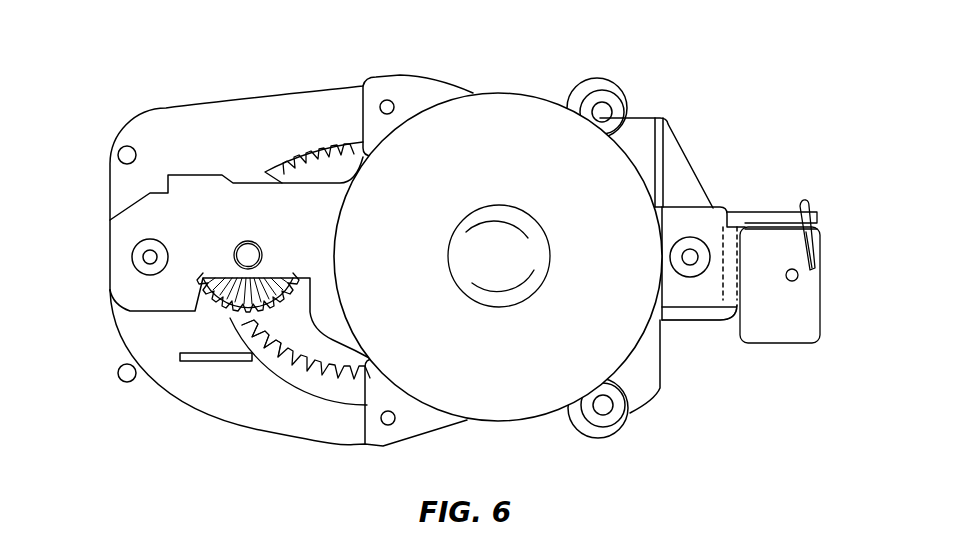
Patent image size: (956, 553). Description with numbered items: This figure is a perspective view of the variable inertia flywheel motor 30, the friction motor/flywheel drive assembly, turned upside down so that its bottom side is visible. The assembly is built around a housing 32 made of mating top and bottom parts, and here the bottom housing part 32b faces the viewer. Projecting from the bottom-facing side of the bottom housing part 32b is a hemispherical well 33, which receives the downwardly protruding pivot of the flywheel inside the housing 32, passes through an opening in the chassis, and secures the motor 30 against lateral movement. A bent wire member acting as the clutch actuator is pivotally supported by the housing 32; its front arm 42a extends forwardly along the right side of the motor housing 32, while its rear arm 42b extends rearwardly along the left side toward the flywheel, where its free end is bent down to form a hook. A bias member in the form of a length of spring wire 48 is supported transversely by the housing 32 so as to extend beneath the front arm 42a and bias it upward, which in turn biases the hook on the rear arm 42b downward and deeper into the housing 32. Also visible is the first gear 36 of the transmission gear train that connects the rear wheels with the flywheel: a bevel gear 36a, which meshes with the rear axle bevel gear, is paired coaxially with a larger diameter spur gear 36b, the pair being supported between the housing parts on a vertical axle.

The variable inertia flywheel motor 30 is at (728, 56).
The housing 32 is at (498, 219).
The bottom housing part 32b is at (526, 167).
The hemispherical well 33 is at (484, 268).
The gear 36 is at (239, 304).
The bevel gear 36a is at (230, 314).
The spur gear 36b is at (243, 296).
The front arm 42a is at (777, 212).
The rear arm 42b is at (687, 321).
The spring wire 48 is at (815, 223).